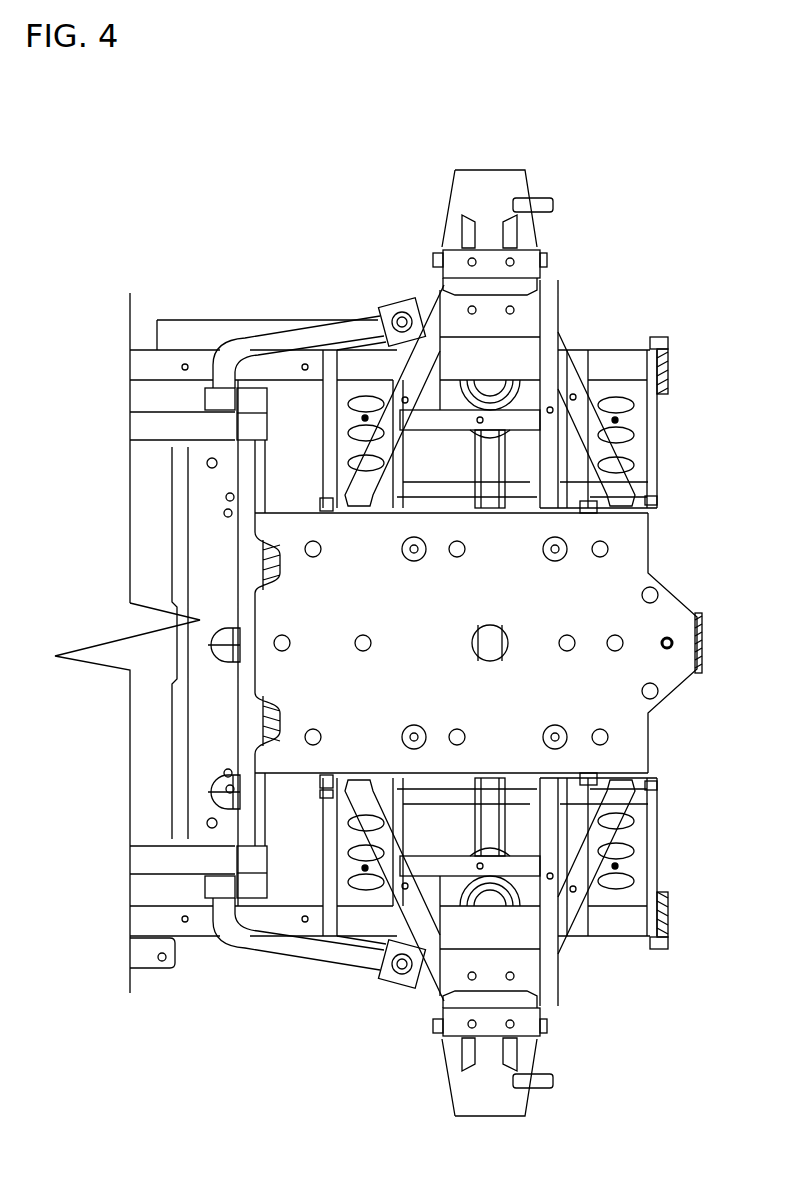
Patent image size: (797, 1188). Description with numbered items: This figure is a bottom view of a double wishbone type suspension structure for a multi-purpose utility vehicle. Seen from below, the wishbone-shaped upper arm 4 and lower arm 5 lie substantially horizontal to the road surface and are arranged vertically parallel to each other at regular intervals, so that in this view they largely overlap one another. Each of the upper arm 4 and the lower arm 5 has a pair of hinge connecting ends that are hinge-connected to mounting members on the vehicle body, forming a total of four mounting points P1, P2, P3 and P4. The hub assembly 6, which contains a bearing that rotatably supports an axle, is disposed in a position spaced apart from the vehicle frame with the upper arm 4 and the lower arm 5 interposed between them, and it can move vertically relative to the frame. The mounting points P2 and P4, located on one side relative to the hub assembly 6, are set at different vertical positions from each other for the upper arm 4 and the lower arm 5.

The upper arm 4 is at (598, 836).
The lower arm 5 is at (547, 917).
The hub assembly 6 is at (523, 1060).
The mounting point P1 is at (325, 793).
The mounting point P2 is at (600, 780).
The mounting point P3 is at (325, 782).
The mounting point P4 is at (652, 787).